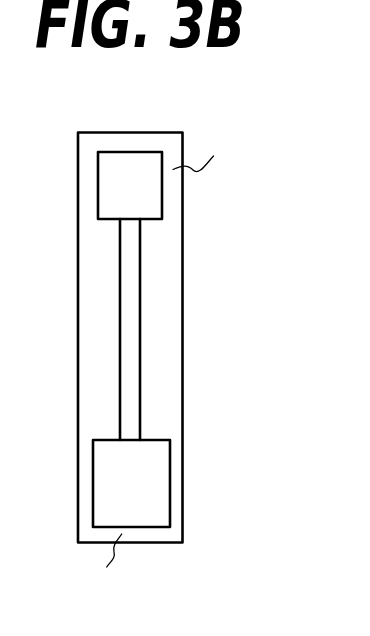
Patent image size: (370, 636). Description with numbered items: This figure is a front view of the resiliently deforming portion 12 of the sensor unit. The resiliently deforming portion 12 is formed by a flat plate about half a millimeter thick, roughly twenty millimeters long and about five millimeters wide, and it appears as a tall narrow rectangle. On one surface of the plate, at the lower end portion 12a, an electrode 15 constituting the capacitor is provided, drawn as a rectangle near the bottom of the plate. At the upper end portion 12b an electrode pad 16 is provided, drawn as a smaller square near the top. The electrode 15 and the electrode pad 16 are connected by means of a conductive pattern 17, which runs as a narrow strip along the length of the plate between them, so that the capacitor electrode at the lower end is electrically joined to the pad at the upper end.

The resiliently deforming portion 12 is at (183, 314).
The lower end portion 12a is at (99, 569).
The upper end portion 12b is at (222, 150).
The electrode 15 is at (160, 480).
The electrode pad 16 is at (121, 182).
The conductive pattern 17 is at (140, 278).